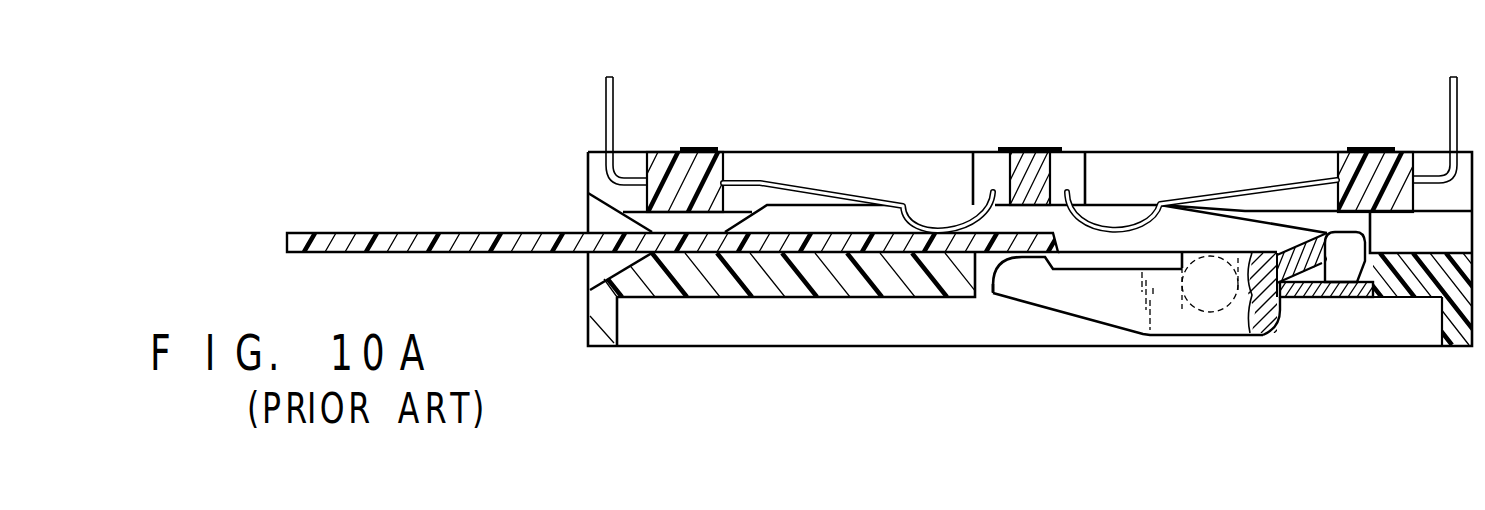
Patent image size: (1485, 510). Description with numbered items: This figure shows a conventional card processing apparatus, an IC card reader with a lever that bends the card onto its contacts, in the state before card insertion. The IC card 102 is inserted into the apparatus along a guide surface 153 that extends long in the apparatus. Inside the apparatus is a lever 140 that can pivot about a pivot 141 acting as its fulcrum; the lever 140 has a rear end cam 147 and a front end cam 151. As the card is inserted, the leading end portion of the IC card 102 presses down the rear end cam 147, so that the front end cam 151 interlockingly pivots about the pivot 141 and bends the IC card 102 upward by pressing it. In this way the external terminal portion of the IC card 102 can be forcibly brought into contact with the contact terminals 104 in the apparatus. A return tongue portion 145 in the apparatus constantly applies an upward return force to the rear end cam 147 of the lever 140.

The IC card 102 is at (440, 232).
The contact terminals 104 is at (870, 203).
The lever 140 is at (1118, 302).
The pivot 141 is at (1197, 308).
The return tongue portion 145 is at (1348, 266).
The rear end cam 147 is at (1363, 295).
The front end cam 151 is at (1015, 285).
The guide surface 153 is at (873, 253).